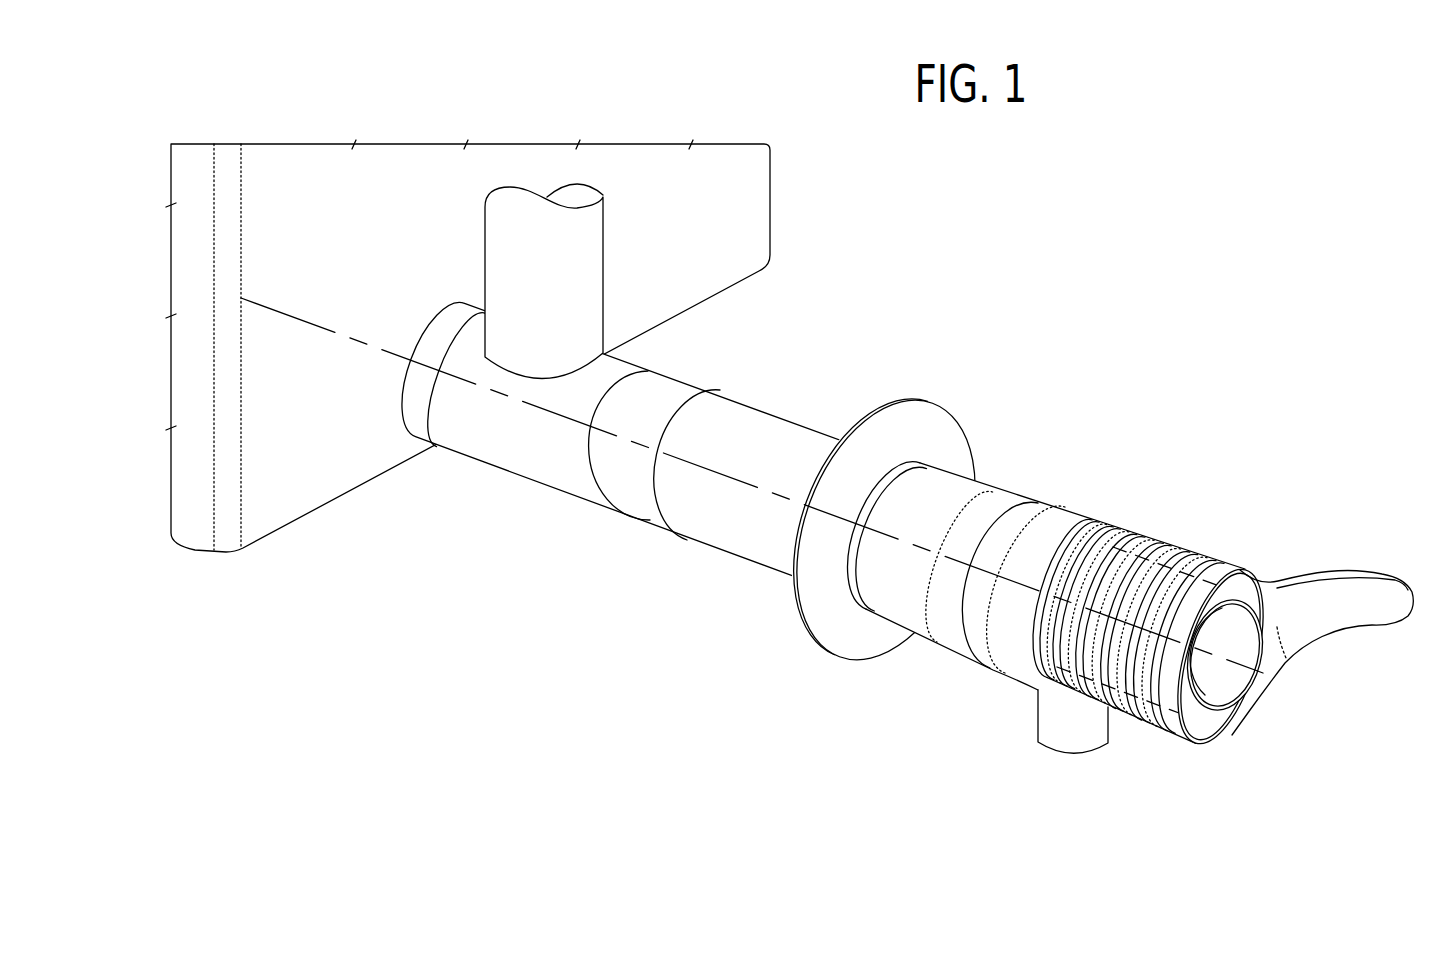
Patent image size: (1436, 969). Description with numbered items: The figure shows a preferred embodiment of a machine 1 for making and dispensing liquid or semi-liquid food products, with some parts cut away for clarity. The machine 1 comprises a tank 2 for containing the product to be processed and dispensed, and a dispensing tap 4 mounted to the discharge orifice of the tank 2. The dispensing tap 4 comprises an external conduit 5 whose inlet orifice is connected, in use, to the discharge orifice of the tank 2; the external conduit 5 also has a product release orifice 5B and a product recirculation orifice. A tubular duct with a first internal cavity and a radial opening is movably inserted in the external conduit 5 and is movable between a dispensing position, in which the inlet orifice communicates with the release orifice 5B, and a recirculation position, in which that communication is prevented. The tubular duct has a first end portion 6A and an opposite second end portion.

The machine 1 is at (1060, 264).
The tank 2 is at (302, 497).
The dispensing tap 4 is at (533, 477).
The external conduit 5 is at (895, 622).
The product release orifice 5B is at (1071, 754).
The first end portion 6A is at (1202, 752).